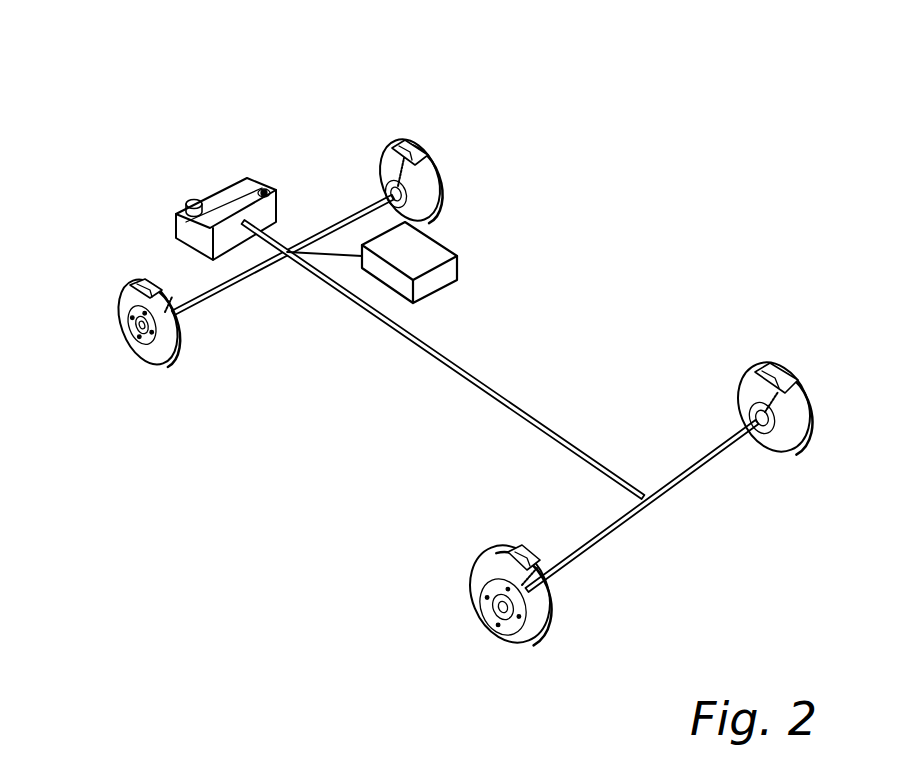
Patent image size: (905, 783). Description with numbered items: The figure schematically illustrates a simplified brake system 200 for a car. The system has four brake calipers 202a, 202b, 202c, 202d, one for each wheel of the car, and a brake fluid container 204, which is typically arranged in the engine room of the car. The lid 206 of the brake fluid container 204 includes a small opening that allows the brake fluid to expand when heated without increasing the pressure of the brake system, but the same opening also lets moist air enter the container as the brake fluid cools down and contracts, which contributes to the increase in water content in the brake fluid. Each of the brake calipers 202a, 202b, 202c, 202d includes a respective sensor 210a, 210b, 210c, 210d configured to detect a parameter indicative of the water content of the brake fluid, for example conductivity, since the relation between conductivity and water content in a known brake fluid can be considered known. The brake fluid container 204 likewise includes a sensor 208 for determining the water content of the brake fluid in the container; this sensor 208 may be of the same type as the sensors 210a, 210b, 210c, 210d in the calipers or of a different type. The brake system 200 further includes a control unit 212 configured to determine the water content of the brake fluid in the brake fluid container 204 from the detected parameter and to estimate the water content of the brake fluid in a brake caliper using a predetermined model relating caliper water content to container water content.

The brake system 200 is at (664, 126).
The brake caliper 202a is at (440, 173).
The brake caliper 202b is at (155, 370).
The brake caliper 202c is at (522, 646).
The brake caliper 202d is at (745, 390).
The brake fluid container 204 is at (236, 183).
The lid 206 is at (192, 200).
The sensor 208 is at (266, 192).
The sensor 210a is at (412, 146).
The sensor 210b is at (136, 285).
The sensor 210c is at (503, 548).
The sensor 210d is at (780, 367).
The control unit 212 is at (453, 271).